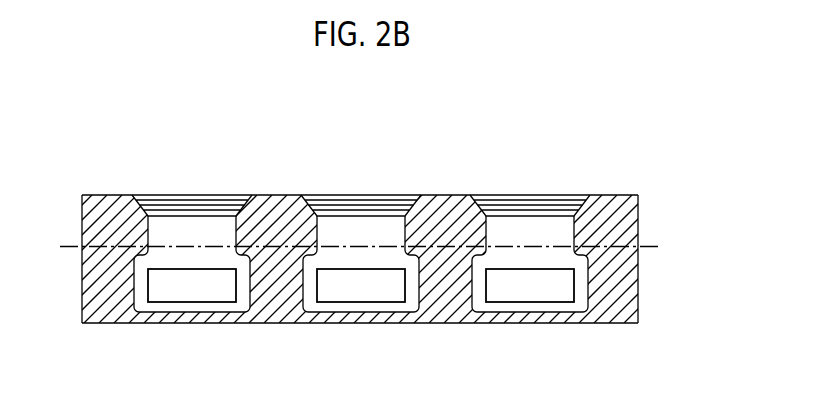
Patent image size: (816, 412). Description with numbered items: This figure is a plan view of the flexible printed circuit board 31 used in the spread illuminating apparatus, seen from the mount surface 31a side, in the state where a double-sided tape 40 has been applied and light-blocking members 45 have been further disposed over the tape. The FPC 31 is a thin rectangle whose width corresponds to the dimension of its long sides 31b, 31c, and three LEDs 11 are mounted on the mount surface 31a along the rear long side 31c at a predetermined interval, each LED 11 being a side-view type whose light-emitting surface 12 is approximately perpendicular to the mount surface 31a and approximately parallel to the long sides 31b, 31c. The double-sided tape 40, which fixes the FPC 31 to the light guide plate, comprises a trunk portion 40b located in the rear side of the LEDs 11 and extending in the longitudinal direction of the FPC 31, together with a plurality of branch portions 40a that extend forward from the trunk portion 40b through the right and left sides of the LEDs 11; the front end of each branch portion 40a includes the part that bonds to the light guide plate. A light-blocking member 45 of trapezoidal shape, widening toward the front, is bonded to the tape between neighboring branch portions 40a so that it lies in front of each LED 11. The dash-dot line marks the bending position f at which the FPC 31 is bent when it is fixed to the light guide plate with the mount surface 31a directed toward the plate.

The flexible printed circuit board 31 is at (383, 253).
The mount surface 31a is at (112, 295).
The long side 31b is at (380, 158).
The long side 31c is at (386, 359).
The double-sided tape 40 is at (383, 259).
The branch portion 40a is at (383, 222).
The trunk portion 40b is at (383, 295).
The light-blocking member 45 is at (361, 169).
The LED 11 is at (361, 332).
The light-emitting surface 12 is at (373, 306).
The bending position f is at (367, 246).